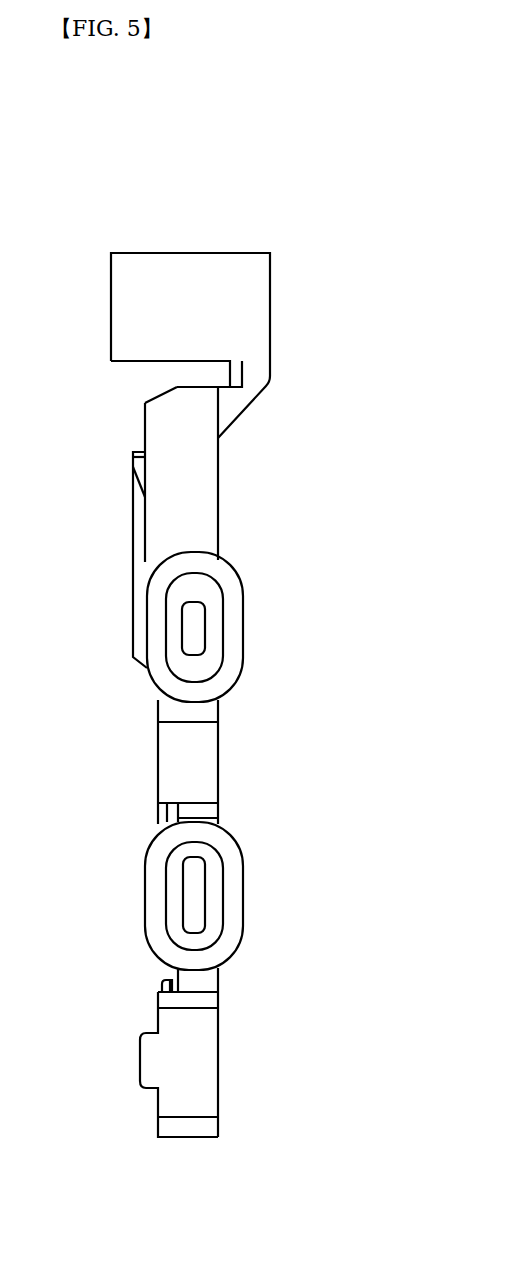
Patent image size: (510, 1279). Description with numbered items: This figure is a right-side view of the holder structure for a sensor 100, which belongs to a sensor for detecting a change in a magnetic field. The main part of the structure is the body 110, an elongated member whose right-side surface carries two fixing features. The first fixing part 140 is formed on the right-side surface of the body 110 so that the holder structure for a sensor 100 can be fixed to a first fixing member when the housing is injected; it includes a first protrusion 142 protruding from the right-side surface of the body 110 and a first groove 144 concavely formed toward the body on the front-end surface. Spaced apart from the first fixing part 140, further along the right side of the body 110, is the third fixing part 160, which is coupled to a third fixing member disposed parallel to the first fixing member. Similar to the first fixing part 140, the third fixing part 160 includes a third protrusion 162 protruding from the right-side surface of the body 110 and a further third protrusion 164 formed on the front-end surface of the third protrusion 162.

The holder structure for a sensor 100 is at (124, 147).
The body 110 is at (203, 754).
The first fixing part 140 is at (267, 616).
The first protrusion 142 is at (203, 587).
The first groove 144 is at (195, 644).
The third fixing part 160 is at (266, 884).
The third protrusion 162 is at (203, 855).
The third protrusion 164 is at (195, 910).